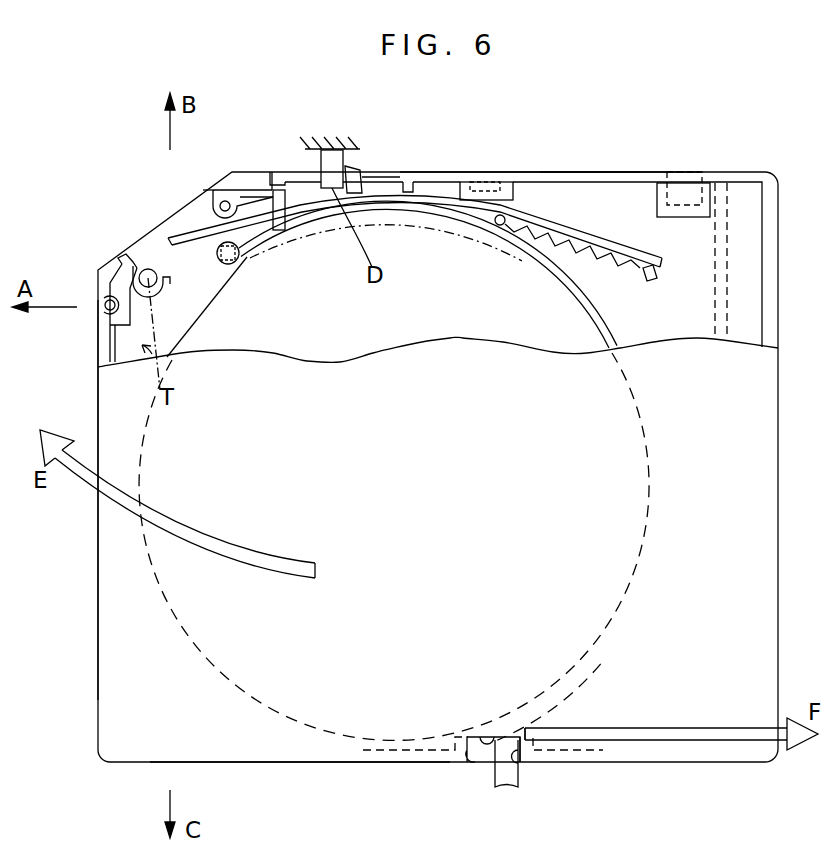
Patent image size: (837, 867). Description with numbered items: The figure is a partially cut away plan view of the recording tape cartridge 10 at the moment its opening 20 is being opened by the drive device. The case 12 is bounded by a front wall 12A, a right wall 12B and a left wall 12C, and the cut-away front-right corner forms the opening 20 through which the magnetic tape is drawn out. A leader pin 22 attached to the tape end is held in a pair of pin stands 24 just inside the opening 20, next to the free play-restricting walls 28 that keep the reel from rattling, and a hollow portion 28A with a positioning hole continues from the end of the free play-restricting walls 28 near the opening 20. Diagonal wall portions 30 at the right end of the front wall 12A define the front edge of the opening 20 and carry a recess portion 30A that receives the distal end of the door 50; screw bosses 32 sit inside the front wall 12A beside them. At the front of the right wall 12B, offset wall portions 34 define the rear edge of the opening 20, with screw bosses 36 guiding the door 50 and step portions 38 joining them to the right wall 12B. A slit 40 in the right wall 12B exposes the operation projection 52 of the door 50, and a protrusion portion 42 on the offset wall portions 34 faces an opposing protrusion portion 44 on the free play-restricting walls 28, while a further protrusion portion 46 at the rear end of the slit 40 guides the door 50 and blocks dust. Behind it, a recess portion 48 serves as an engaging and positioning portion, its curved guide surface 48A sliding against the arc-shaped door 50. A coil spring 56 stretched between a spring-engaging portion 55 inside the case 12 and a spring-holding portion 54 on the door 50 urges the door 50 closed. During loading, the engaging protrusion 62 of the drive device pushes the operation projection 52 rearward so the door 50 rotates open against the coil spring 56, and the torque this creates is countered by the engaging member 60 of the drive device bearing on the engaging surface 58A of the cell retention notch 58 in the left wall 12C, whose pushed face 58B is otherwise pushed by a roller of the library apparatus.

The recording tape cartridge 10 is at (549, 98).
The case 12 is at (694, 163).
The front wall 12A is at (100, 357).
The right wall 12B is at (583, 180).
The left wall 12C is at (306, 763).
The opening 20 is at (155, 238).
The leader pin 22 is at (170, 345).
The pin stands 24 is at (167, 282).
The free play-restricting walls 28 is at (333, 213).
The hollow portion 28A is at (236, 264).
The diagonal wall portions 30 is at (108, 282).
The recess portion 30A is at (124, 256).
The screw bosses 32 is at (101, 306).
The offset wall portions 34 is at (249, 190).
The screw bosses 36 is at (205, 190).
The step portions 38 is at (272, 176).
The slit 40 is at (390, 184).
The protrusion portion 42 is at (296, 225).
The protrusion portion 44 is at (279, 230).
The protrusion portion 46 is at (410, 193).
The recess portion 48 is at (494, 181).
The guide surface 48A is at (459, 199).
The door 50 is at (192, 215).
The operation projection 52 is at (346, 167).
The spring-holding portion 54 is at (652, 277).
The spring-engaging portion 55 is at (496, 226).
The coil spring 56 is at (606, 276).
The cell retention notch 58 is at (470, 760).
The engaging surface 58A is at (519, 758).
The pushed face 58B is at (482, 737).
The engaging member 60 is at (500, 768).
The engaging protrusion 62 is at (325, 136).